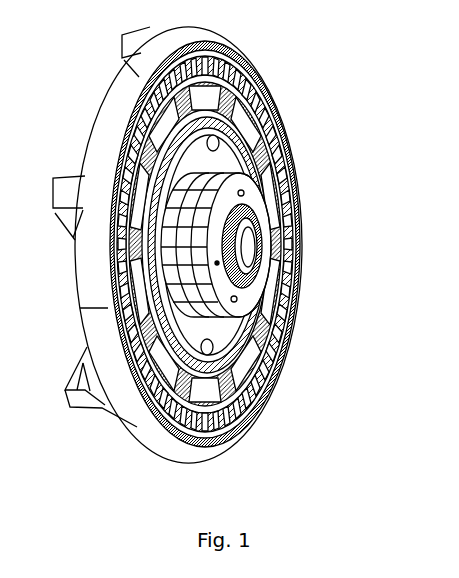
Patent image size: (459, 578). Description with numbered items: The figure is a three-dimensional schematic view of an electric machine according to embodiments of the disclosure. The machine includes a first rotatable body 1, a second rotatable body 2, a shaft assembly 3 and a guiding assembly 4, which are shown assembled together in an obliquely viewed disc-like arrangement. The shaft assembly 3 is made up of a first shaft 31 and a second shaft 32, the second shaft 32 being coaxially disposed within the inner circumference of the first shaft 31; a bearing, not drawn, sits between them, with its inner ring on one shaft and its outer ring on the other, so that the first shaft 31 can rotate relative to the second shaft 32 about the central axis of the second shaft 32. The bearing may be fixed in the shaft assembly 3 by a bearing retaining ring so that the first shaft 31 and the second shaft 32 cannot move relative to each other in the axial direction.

The first rotatable body 1 is at (288, 305).
The second rotatable body 2 is at (292, 260).
The shaft assembly 3 is at (255, 244).
The first shaft 31 is at (290, 153).
The second shaft 32 is at (363, 135).
The guiding assembly 4 is at (275, 98).